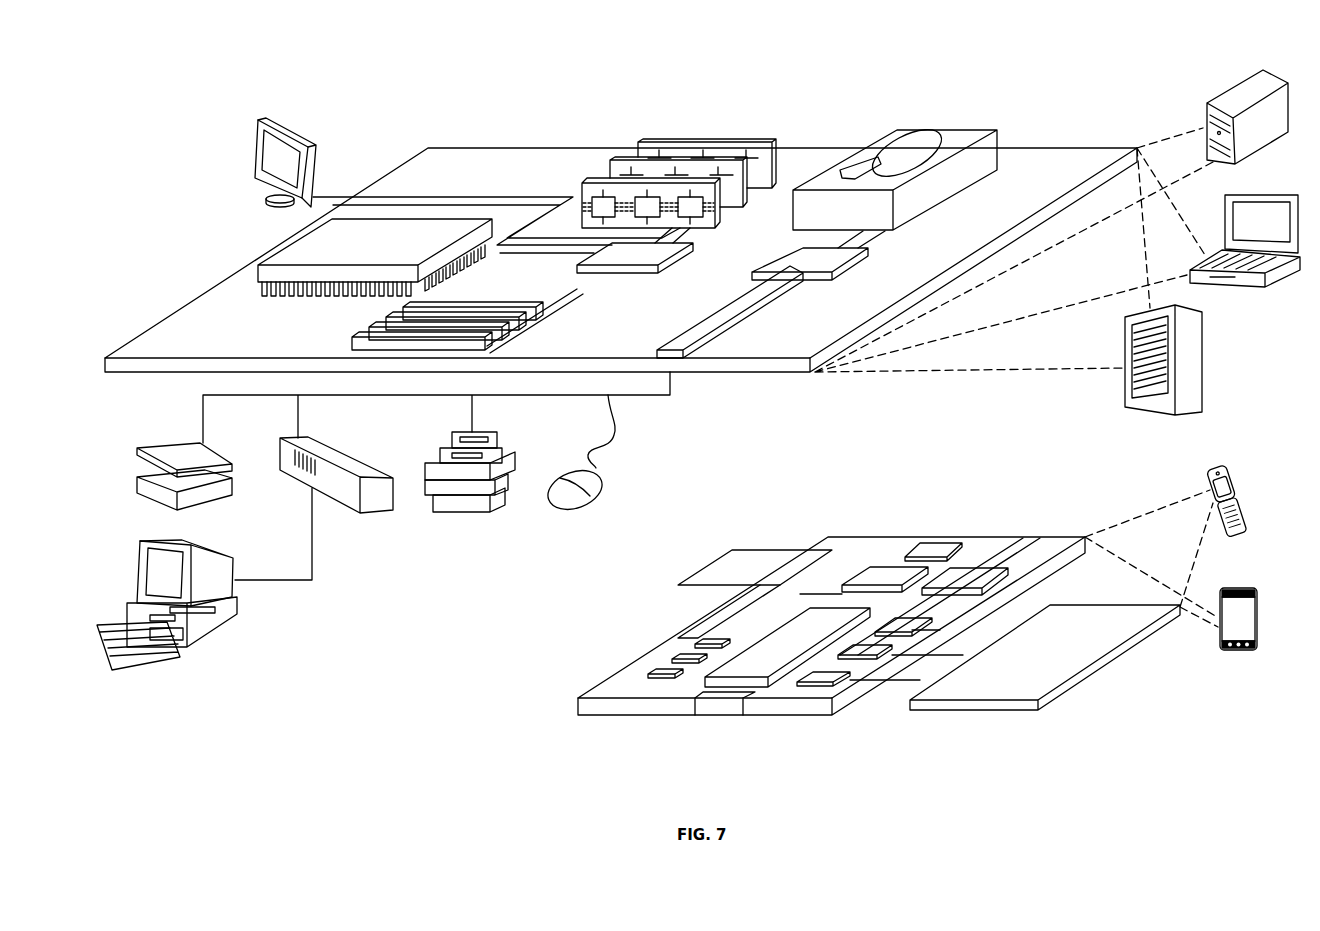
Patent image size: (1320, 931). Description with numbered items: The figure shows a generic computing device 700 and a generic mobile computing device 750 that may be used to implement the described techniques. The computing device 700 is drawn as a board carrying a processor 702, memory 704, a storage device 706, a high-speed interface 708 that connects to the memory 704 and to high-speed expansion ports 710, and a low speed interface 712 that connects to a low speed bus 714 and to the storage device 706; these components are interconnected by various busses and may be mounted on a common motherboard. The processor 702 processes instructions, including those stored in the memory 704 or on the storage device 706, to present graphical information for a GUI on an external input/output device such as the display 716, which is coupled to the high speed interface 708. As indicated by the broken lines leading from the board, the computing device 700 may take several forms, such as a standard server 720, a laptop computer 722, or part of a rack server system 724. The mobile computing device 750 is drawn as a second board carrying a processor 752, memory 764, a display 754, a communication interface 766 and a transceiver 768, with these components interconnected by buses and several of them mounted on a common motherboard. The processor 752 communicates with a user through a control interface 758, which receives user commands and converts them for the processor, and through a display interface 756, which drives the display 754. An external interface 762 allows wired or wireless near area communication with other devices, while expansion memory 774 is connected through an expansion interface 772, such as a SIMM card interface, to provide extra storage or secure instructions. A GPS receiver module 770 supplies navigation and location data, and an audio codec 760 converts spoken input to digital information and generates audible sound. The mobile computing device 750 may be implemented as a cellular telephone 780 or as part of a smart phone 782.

The computing device 700 is at (382, 96).
The processor 702 is at (292, 248).
The memory 704 is at (713, 148).
The storage device 706 is at (937, 128).
The high-speed interface 708 is at (652, 252).
The high-speed expansion ports 710 is at (380, 325).
The low speed interface 712 is at (790, 260).
The low speed bus 714 is at (680, 350).
The display 716 is at (263, 120).
The standard server 720 is at (1228, 98).
The laptop computer 722 is at (1278, 195).
The rack server system 724 is at (1206, 360).
The mobile computing device 750 is at (532, 730).
The processor 752 is at (768, 655).
The display 754 is at (1082, 618).
The display interface 756 is at (833, 678).
The control interface 758 is at (870, 648).
The audio codec 760 is at (908, 618).
The external interface 762 is at (721, 710).
The memory 764 is at (672, 658).
The communication interface 766 is at (880, 568).
The transceiver 768 is at (975, 568).
The GPS receiver module 770 is at (936, 545).
The expansion interface 772 is at (815, 550).
The expansion memory 774 is at (733, 550).
The cellular telephone 780 is at (1216, 468).
The smart phone 782 is at (1232, 590).